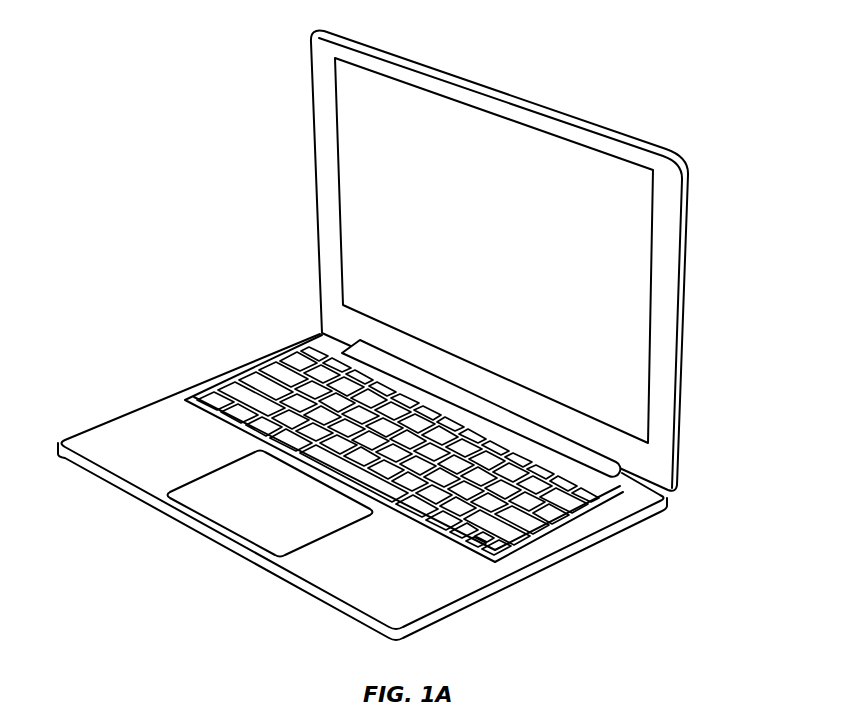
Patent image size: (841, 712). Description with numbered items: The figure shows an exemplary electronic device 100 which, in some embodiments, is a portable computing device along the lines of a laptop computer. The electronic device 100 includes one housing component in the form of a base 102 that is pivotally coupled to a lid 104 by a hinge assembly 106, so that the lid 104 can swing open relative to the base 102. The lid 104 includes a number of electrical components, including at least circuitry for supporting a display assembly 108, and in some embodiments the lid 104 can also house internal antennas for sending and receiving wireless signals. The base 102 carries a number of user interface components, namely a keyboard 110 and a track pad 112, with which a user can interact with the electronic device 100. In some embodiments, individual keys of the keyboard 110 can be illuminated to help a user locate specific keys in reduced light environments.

The electronic device 100 is at (103, 177).
The base 102 is at (163, 455).
The lid 104 is at (686, 320).
The hinge assembly 106 is at (336, 347).
The display assembly 108 is at (608, 365).
The keyboard 110 is at (598, 512).
The track pad 112 is at (292, 518).